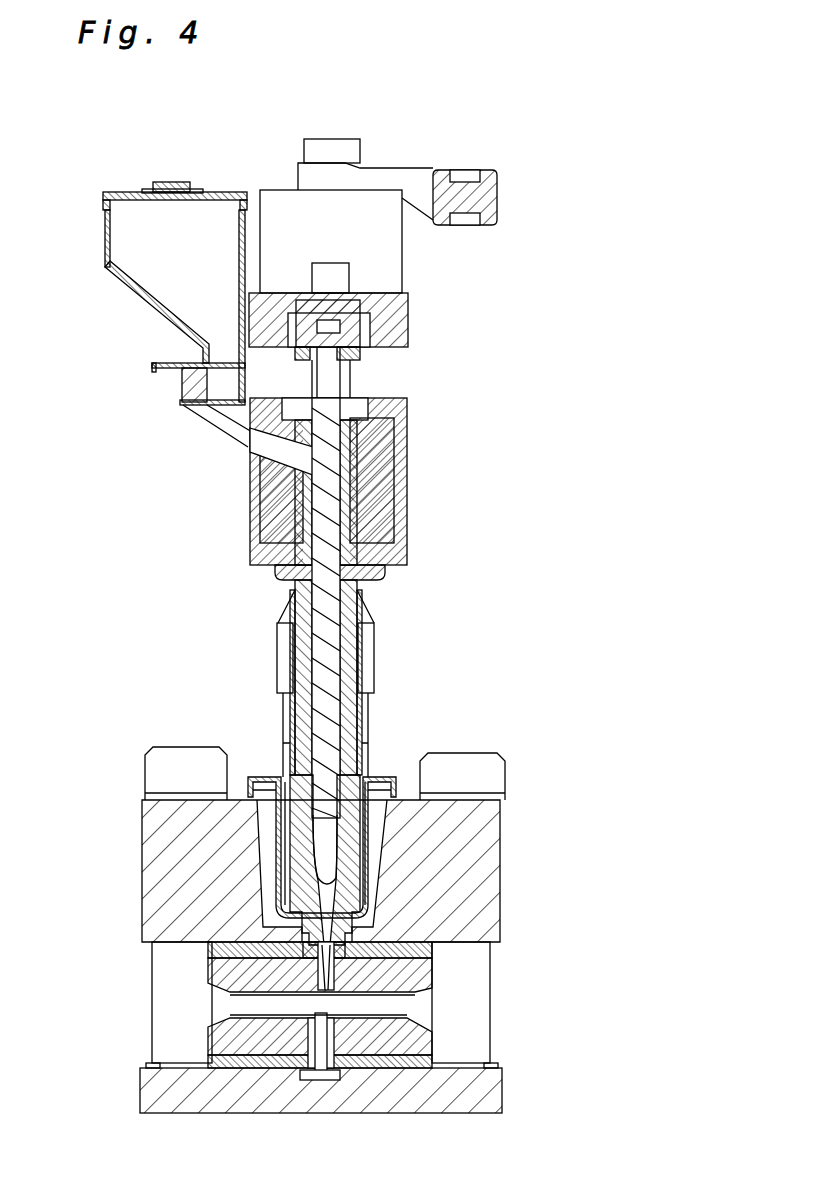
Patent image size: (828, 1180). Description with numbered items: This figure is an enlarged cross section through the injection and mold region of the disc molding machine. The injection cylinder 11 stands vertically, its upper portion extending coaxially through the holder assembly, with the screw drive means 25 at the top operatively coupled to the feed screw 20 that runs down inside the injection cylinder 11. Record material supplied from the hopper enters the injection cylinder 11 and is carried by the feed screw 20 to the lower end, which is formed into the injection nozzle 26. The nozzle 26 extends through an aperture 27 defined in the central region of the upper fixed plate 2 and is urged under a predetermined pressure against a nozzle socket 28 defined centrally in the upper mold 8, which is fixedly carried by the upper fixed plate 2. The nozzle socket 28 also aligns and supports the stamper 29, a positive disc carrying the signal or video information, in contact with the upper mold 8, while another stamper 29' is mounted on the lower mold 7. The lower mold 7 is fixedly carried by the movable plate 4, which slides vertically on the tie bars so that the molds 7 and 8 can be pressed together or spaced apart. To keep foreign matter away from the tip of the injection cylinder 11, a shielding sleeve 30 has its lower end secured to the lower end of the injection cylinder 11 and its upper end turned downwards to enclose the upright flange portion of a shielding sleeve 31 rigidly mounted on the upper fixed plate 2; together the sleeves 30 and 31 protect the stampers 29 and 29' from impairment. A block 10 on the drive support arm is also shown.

The upper fixed plate 2 is at (483, 860).
The movable plate 4 is at (475, 1095).
The lower mold 7 is at (228, 1040).
The upper mold 8 is at (220, 968).
The drive arm support block 10 is at (497, 200).
The injection cylinder 11 is at (372, 688).
The feed screw 20 is at (324, 738).
The screw drive means 25 is at (385, 265).
The injection nozzle 26 is at (347, 937).
The aperture 27 is at (376, 830).
The nozzle socket 28 is at (340, 955).
The stamper 29 is at (423, 979).
The stamper 29' is at (427, 1017).
The shielding sleeve 30 is at (265, 858).
The shielding sleeve 31 is at (262, 812).